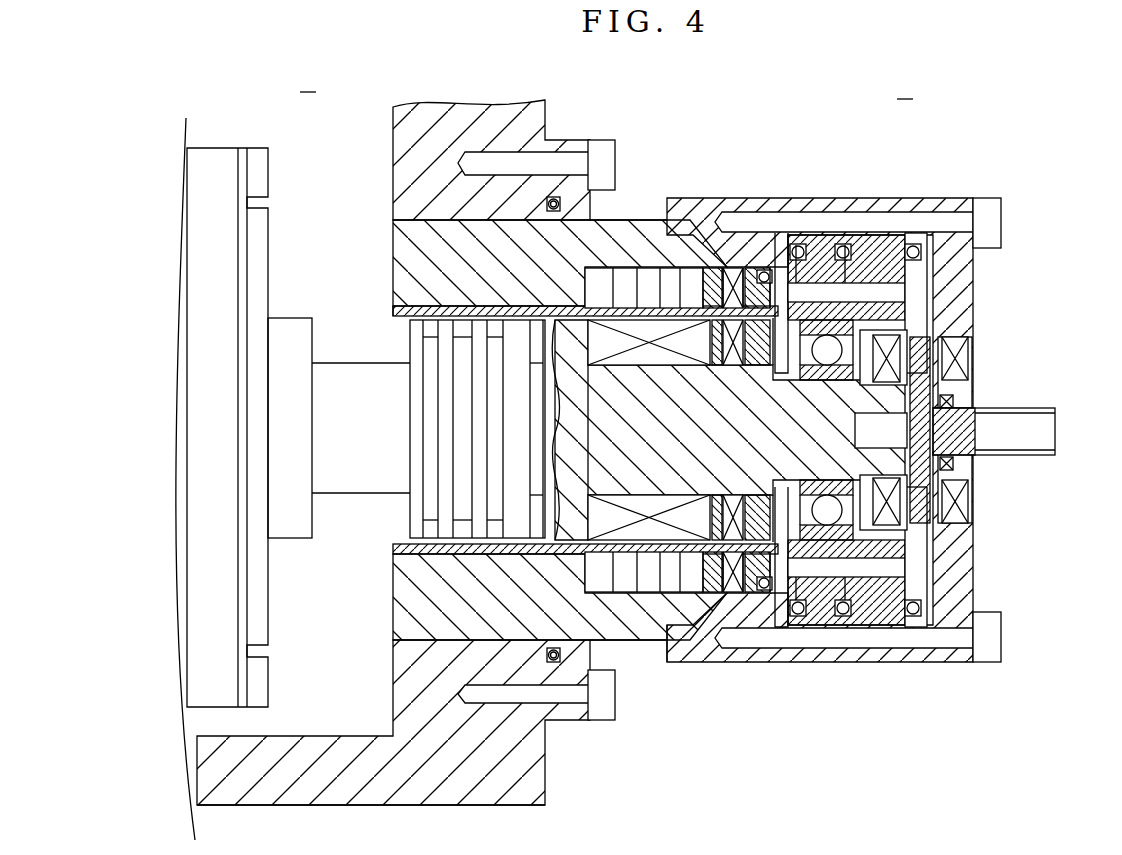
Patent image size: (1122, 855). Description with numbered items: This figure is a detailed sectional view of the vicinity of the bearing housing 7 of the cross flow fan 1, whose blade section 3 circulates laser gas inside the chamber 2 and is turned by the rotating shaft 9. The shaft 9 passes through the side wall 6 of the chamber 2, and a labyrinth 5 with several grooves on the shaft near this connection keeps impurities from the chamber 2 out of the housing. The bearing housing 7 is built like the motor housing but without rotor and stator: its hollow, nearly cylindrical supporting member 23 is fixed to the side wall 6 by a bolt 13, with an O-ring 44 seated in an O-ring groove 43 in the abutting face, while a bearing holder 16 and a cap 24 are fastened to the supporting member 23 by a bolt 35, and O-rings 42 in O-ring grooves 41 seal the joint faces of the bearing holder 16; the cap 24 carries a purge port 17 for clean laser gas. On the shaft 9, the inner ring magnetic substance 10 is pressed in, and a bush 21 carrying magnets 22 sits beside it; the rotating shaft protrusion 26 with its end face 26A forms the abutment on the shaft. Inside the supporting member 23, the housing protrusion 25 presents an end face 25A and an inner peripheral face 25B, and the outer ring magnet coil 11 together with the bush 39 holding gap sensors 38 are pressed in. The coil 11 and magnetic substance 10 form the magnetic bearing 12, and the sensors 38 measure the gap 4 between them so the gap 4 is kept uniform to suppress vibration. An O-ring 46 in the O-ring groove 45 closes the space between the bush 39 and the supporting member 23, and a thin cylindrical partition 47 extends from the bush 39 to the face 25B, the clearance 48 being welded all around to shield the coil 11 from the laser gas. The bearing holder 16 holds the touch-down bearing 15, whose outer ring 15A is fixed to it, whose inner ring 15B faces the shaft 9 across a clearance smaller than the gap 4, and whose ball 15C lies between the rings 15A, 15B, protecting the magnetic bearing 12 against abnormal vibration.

The cross flow fan 1 is at (270, 134).
The chamber 2 is at (518, 805).
The blade section 3 is at (208, 148).
The gap 4 is at (840, 430).
The labyrinth 5 is at (410, 520).
The side wall 6 is at (546, 104).
The bearing housing 7 is at (862, 136).
The rotating shaft 9 is at (330, 375).
The inner ring magnetic substance 10 is at (590, 325).
The outer ring magnet coil 11 is at (588, 282).
The magnetic bearing 12 is at (512, 250).
The bolt 13 is at (606, 140).
The touch-down bearing 15 is at (973, 446).
The outer ring 15A is at (840, 535).
The inner ring 15B is at (850, 497).
The ball 15C is at (832, 512).
The bearing holder 16 is at (822, 628).
The purge port 17 is at (1025, 408).
The bush 21 is at (757, 365).
The magnet 22 is at (735, 365).
The supporting member 23 is at (705, 662).
The cap 24 is at (925, 662).
The housing protrusion 25 is at (438, 560).
The end face 25A is at (590, 570).
The inner peripheral face 25B is at (518, 560).
The rotating shaft protrusion 26 is at (728, 430).
The end face 26A is at (615, 500).
The bolt 35 is at (1003, 224).
The gap sensor 38 is at (730, 268).
The bush 39 is at (748, 276).
The O-ring groove 41 is at (818, 245).
The O-ring 42 is at (796, 245).
The O-ring groove 43 is at (548, 203).
The O-ring 44 is at (548, 212).
The O-ring groove 45 is at (770, 272).
The O-ring 46 is at (778, 268).
The partition 47 is at (412, 308).
The clearance 48 is at (395, 308).